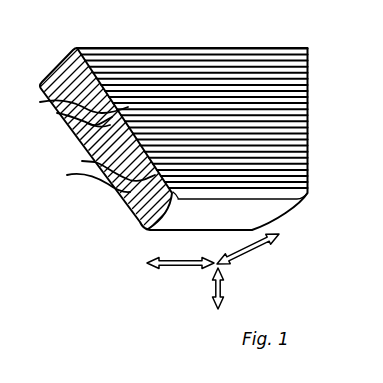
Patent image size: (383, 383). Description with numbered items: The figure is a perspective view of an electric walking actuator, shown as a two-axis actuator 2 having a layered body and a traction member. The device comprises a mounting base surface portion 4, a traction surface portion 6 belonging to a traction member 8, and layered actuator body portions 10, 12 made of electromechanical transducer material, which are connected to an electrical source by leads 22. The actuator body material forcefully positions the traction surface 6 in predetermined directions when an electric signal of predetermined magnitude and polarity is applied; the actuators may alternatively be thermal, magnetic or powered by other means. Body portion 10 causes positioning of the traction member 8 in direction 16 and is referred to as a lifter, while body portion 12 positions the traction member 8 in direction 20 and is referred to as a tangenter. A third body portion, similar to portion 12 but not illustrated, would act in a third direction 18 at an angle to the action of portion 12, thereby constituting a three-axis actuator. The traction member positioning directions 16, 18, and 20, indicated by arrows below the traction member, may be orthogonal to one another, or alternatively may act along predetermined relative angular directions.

The two-axis actuator 2 is at (53, 223).
The mounting base surface portion 4 is at (184, 47).
The traction surface portion 6 is at (278, 208).
The traction member 8 is at (306, 194).
The layered actuator body portion (lifter) 10 is at (308, 89).
The layered actuator body portion (tangenter) 12 is at (308, 136).
The traction member positioning direction 16 is at (222, 278).
The third direction 18 is at (255, 245).
The traction member positioning direction 20 is at (183, 266).
The leads 22 is at (27, 110).